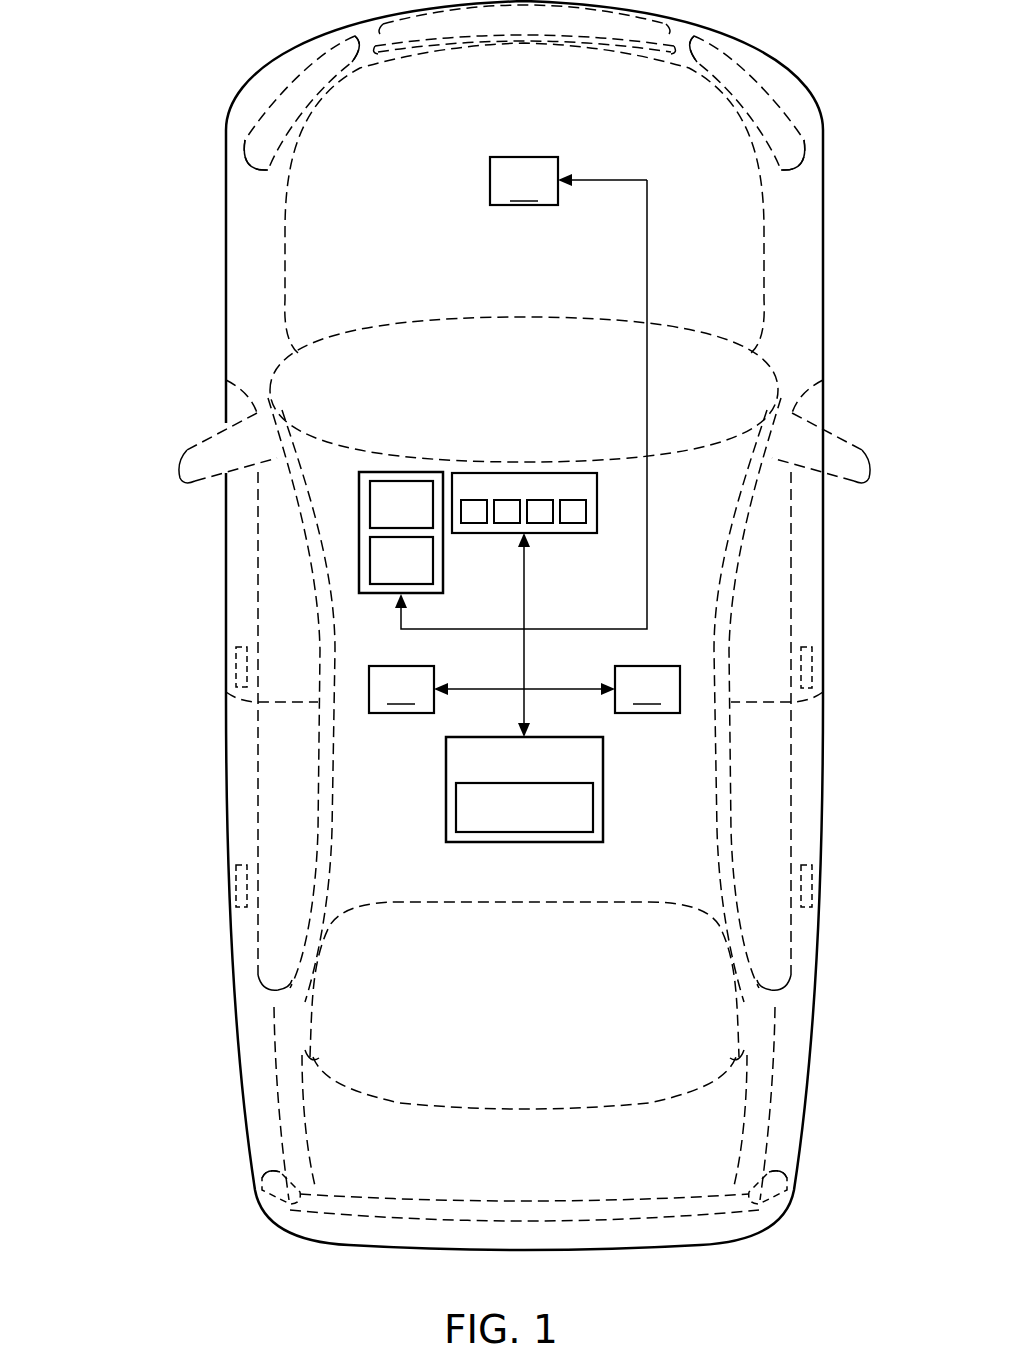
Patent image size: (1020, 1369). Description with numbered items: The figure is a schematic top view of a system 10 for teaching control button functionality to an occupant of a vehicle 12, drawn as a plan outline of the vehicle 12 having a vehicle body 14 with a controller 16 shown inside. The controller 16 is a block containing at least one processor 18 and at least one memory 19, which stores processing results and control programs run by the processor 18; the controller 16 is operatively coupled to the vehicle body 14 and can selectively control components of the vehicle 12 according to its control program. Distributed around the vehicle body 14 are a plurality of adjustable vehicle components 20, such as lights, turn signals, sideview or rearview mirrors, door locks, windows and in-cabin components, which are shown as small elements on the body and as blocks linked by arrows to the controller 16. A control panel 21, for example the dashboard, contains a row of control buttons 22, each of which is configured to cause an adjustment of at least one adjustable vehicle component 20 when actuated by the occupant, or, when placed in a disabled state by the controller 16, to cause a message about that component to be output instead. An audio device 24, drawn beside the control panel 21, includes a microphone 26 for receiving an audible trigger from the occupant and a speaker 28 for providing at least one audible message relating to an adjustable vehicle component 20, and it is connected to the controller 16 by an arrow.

The system 10 is at (108, 583).
The vehicle 12 is at (226, 278).
The vehicle body 14 is at (822, 815).
The controller 16 is at (549, 789).
The processor 18 is at (509, 772).
The memory 19 is at (509, 820).
The adjustable vehicle component 20 is at (262, 75).
The control panel 21 is at (544, 605).
The control button 22 is at (523, 551).
The audio device 24 is at (377, 526).
The microphone 26 is at (387, 518).
The speaker 28 is at (387, 575).